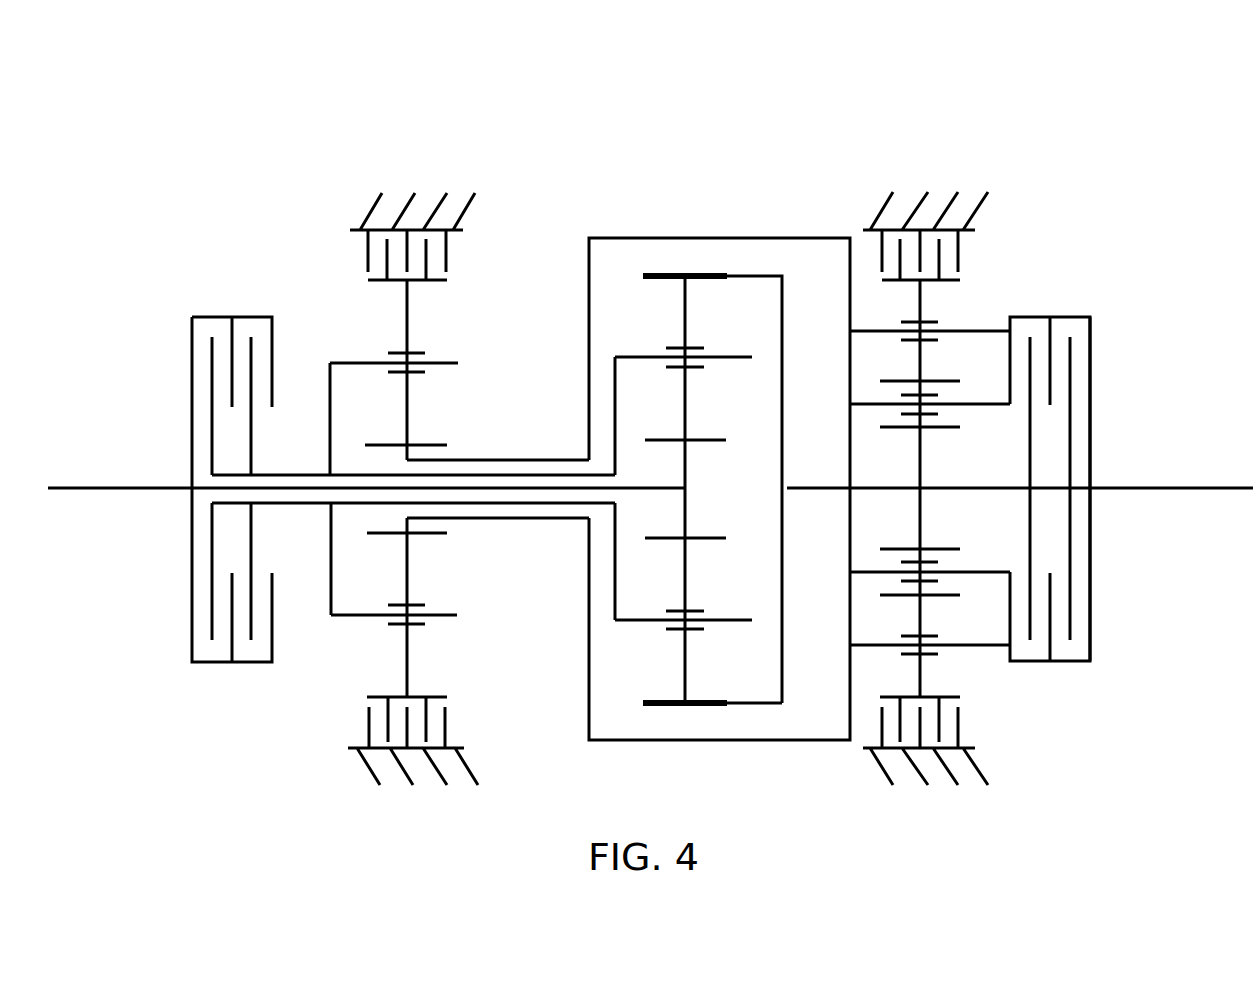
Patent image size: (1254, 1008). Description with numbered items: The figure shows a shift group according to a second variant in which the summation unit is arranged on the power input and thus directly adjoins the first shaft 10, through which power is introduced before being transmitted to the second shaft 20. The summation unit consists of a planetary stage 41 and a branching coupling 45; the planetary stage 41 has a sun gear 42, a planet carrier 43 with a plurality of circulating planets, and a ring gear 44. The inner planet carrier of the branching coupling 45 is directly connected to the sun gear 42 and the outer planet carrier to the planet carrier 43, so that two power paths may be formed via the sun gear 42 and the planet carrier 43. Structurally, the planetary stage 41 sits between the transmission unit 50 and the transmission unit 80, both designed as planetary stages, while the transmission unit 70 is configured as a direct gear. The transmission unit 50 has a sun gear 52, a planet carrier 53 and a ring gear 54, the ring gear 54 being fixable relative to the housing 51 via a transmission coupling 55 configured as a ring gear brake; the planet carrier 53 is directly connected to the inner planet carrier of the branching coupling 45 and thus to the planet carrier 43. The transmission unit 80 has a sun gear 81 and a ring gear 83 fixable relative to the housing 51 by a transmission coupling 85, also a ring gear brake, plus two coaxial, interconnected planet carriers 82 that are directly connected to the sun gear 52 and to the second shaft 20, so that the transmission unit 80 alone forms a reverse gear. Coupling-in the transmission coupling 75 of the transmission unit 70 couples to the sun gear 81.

The first shaft 10 is at (78, 487).
The second shaft 20 is at (1202, 488).
The planetary stage 41 is at (719, 426).
The sun gear 42 is at (685, 507).
The planet carrier 43 is at (685, 660).
The ring gear 44 is at (722, 274).
The branching coupling 45 is at (212, 302).
The transmission unit 50 is at (659, 220).
The housing 51 is at (437, 198).
The sun gear 52 is at (407, 453).
The planet carrier 53 is at (407, 315).
The ring gear 54 is at (433, 281).
The transmission coupling 55 is at (380, 750).
The transmission unit 70 is at (1105, 421).
The transmission coupling 75 is at (1092, 333).
The transmission unit 80 is at (965, 165).
The sun gear 81 is at (920, 523).
The planet carriers 82 is at (920, 588).
The ring gear 83 is at (890, 698).
The transmission coupling 85 is at (940, 255).